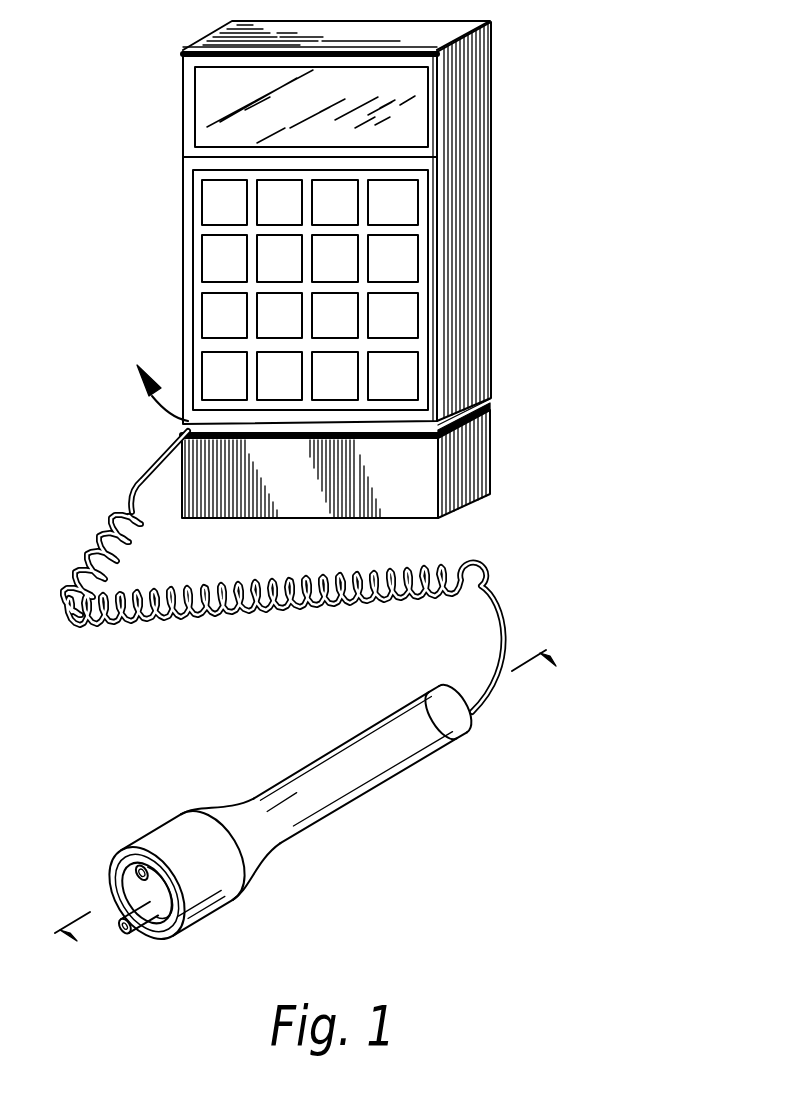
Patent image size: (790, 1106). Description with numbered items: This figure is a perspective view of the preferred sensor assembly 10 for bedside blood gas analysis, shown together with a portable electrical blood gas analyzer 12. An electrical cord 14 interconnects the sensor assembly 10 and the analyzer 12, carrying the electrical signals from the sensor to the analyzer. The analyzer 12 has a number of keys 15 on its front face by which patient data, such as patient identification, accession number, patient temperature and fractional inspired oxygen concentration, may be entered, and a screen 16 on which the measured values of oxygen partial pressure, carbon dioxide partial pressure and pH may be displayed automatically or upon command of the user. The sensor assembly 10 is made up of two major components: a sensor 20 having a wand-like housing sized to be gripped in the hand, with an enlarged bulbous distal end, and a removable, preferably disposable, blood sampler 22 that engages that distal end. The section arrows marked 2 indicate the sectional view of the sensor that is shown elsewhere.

The sensor assembly 10 is at (278, 805).
The portable electrical blood gas analyzer 12 is at (374, 269).
The electrical cord 14 is at (258, 621).
The keys 15 is at (402, 263).
The screen 16 is at (208, 110).
The sensor 20 is at (368, 783).
The blood sampler 22 is at (142, 892).
The section line 2- 2 is at (553, 661).